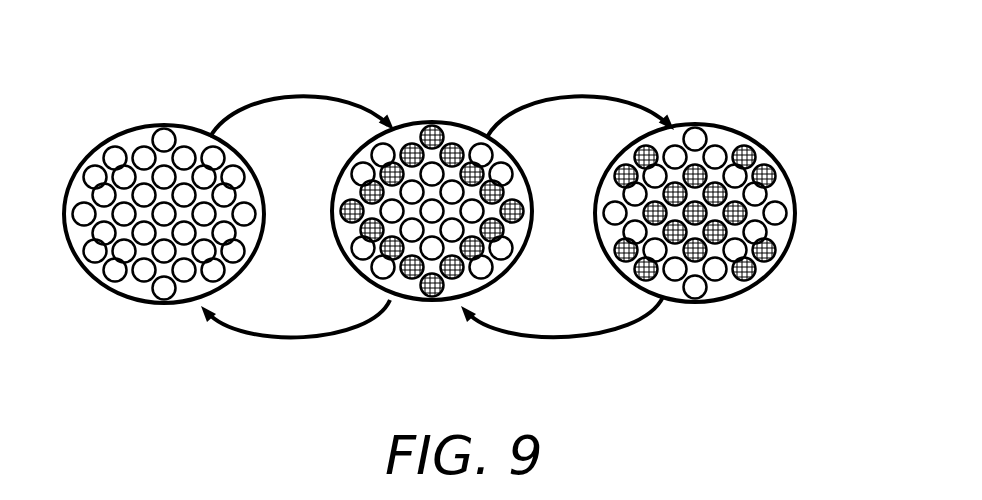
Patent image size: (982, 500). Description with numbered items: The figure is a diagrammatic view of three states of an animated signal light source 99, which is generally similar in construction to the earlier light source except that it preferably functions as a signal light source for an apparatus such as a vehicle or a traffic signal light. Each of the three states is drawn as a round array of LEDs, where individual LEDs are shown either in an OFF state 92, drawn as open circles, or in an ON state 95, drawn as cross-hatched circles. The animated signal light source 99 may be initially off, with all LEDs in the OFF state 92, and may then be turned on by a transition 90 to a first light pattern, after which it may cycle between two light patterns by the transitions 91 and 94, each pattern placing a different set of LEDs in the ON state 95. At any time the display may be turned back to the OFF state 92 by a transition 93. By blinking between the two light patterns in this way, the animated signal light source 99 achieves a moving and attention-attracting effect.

The transition 90 is at (302, 92).
The transition 91 is at (575, 95).
The OFF state 92 is at (143, 150).
The transition 93 is at (262, 338).
The transition 94 is at (585, 340).
The ON state 95 is at (410, 280).
The animated signal light source 99 is at (218, 422).